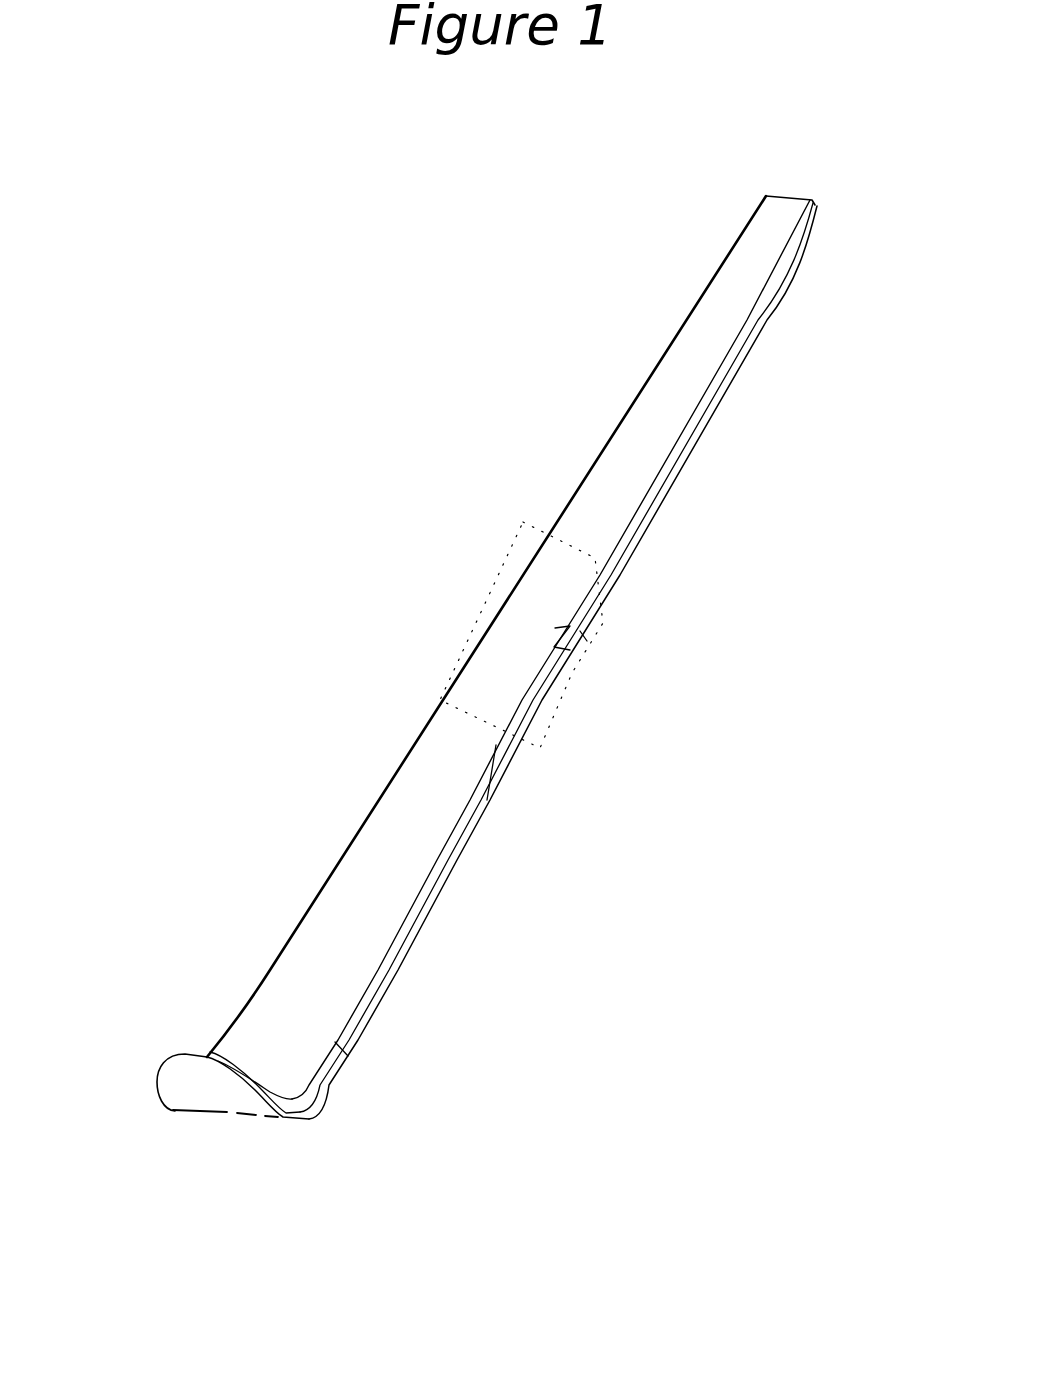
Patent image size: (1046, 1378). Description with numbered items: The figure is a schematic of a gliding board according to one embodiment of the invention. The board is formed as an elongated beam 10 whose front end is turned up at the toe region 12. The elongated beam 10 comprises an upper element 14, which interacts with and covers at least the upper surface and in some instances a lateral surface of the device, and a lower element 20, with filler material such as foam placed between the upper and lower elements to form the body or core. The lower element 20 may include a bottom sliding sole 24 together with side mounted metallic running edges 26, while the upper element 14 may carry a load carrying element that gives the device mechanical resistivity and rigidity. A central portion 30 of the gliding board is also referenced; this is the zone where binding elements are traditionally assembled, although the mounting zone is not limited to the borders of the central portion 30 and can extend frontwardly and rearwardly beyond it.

The elongated beam 10 is at (630, 266).
The toe region 12 is at (174, 1028).
The upper element 14 is at (374, 822).
The lower element 20 is at (450, 918).
The bottom sliding sole 24 is at (217, 1133).
The side mounted metallic running edges 26 is at (725, 240).
The central portion 30 is at (598, 664).